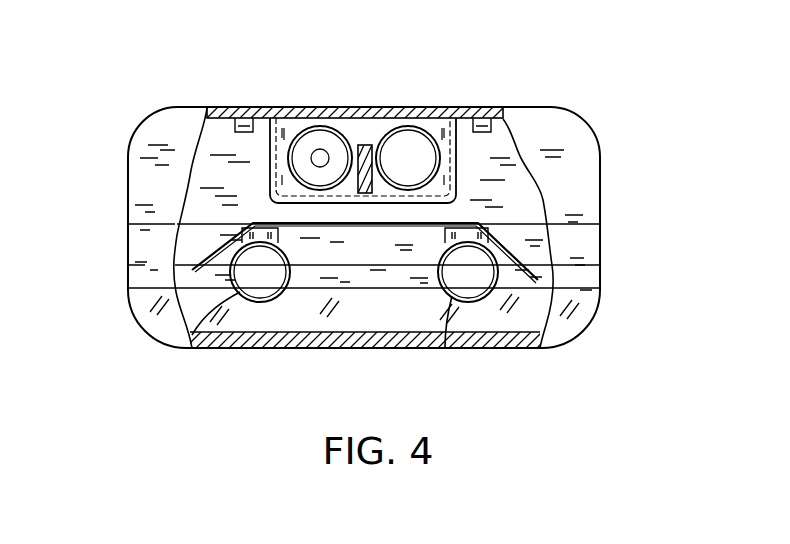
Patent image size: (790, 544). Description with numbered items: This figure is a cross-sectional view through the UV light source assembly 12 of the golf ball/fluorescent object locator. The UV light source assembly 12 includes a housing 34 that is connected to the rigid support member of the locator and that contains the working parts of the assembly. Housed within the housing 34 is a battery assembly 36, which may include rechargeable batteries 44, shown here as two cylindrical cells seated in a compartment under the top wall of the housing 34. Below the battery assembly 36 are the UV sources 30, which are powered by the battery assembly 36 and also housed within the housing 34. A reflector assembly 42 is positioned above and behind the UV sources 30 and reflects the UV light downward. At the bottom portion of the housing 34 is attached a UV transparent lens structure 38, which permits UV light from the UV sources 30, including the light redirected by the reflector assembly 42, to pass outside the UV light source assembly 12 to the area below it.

The UV light source assembly 12 is at (607, 228).
The UV source 30 is at (190, 348).
The housing 34 is at (560, 130).
The battery assembly 36 is at (360, 108).
The UV transparent lens structure 38 is at (287, 348).
The reflector assembly 42 is at (200, 257).
The rechargeable batteries 44 is at (305, 145).